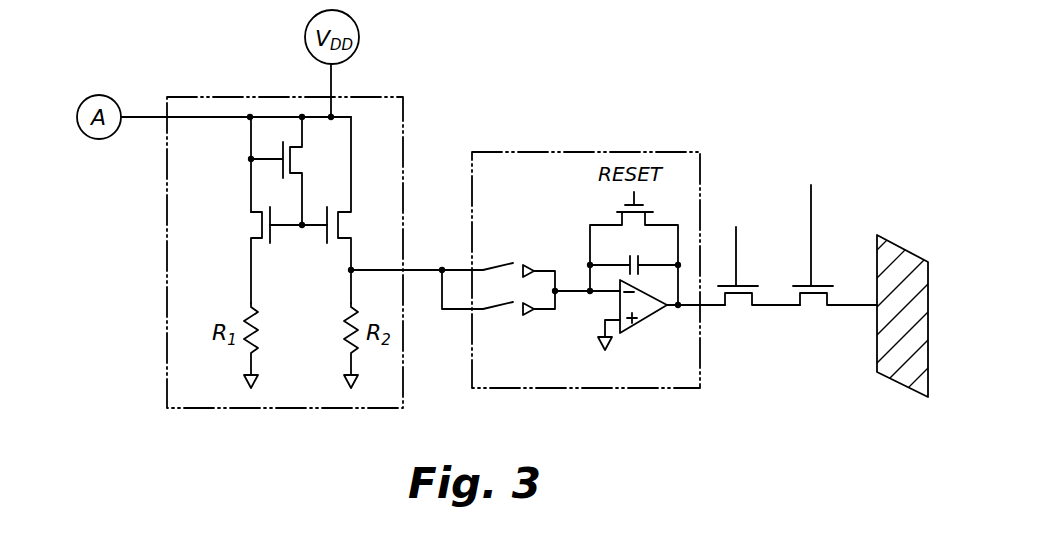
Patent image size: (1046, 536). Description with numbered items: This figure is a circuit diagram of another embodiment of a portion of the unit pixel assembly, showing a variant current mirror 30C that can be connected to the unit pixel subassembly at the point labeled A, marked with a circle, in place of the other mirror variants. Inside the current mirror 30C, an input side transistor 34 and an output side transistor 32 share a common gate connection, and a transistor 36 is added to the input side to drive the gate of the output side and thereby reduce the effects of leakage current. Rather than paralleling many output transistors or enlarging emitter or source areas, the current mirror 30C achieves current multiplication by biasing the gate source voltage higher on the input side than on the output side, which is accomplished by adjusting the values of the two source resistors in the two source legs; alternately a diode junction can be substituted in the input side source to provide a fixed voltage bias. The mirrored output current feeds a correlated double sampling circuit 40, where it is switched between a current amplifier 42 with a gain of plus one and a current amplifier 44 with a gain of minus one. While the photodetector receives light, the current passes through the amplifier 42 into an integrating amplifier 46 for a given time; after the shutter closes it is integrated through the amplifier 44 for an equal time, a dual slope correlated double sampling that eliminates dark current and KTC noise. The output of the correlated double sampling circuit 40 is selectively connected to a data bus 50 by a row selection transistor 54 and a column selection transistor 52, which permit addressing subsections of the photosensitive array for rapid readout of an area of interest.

The current mirror 30C is at (365, 97).
The output side transistor 32 is at (345, 242).
The input side transistor 34 is at (258, 233).
The transistor 36 is at (303, 151).
The correlated double sampling circuit 40 is at (688, 152).
The current amplifier 42 is at (522, 263).
The current amplifier 44 is at (520, 318).
The integrating amplifier 46 is at (641, 322).
The data bus 50 is at (899, 247).
The column selection transistor 52 is at (803, 308).
The row selection transistor 54 is at (728, 308).